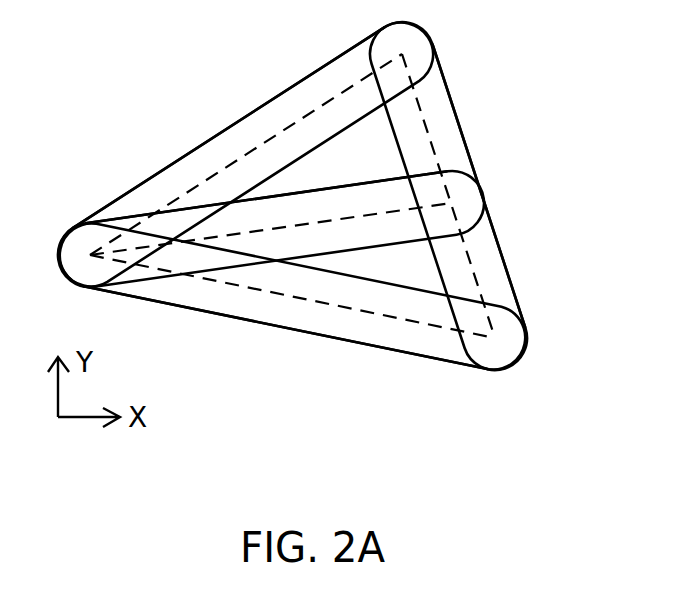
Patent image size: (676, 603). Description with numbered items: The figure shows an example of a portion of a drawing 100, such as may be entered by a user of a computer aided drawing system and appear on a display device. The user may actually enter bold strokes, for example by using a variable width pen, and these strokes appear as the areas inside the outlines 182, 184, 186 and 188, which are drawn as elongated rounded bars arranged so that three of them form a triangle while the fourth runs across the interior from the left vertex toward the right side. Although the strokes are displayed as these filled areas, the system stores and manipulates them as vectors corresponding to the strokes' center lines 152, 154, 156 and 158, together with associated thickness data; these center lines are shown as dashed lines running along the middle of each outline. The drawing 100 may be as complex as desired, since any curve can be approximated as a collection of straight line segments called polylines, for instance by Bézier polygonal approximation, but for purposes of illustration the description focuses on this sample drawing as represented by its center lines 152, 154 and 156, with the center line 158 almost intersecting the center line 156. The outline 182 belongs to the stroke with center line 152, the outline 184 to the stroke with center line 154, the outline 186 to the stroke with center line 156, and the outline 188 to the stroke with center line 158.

The drawing 100 is at (146, 50).
The center line 152 is at (250, 148).
The center line 154 is at (371, 317).
The center line 156 is at (415, 92).
The center line 158 is at (318, 223).
The outline 182 is at (274, 99).
The outline 184 is at (243, 319).
The outline 186 is at (469, 153).
The outline 188 is at (312, 191).